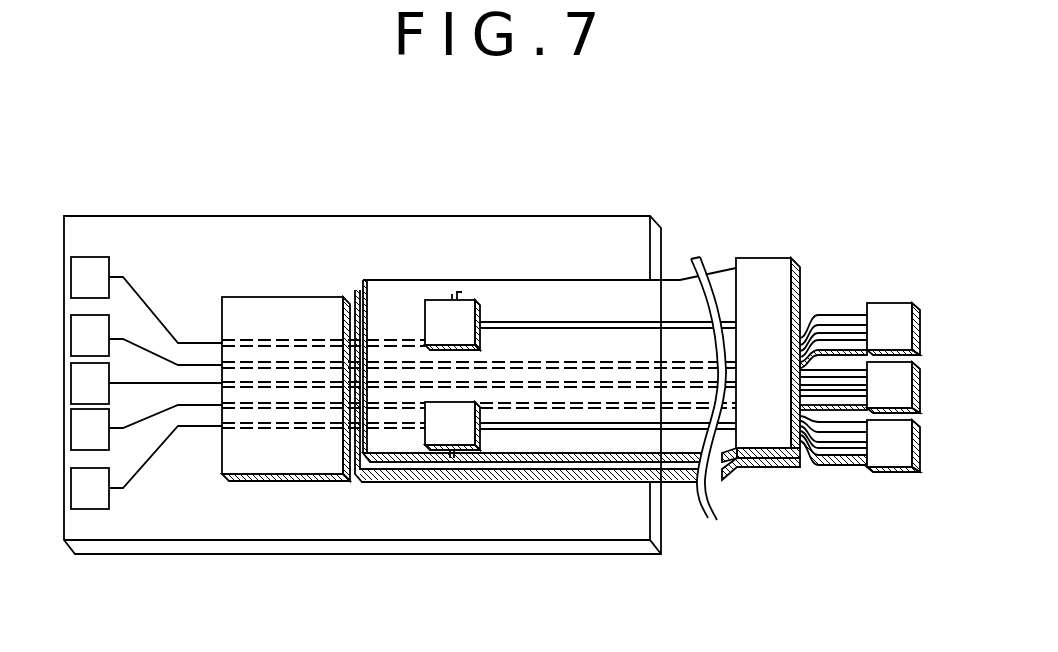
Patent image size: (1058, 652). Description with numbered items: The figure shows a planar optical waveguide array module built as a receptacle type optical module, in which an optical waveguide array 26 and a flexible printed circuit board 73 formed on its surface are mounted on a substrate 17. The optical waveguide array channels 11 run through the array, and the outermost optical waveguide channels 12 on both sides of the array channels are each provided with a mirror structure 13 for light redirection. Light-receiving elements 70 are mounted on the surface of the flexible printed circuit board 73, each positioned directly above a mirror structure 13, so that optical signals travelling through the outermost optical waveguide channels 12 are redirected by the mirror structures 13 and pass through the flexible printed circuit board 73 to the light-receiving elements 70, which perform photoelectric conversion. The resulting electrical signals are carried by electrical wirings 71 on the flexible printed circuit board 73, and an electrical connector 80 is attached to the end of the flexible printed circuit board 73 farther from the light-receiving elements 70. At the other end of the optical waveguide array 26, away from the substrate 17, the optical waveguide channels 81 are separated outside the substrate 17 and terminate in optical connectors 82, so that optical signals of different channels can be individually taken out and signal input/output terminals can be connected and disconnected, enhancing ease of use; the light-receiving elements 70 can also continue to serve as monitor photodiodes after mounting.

The optical waveguide array channels 11 is at (380, 457).
The outermost optical waveguide channels 12 is at (390, 337).
The mirror structure 13 is at (458, 298).
The substrate 17 is at (440, 250).
The optical waveguide array 26 is at (678, 483).
The light-receiving elements 70 is at (463, 318).
The electrical wirings 71 is at (610, 320).
The flexible printed circuit board 73 is at (672, 303).
The electrical connector 80 is at (765, 293).
The optical waveguide channels 81 is at (838, 323).
The optical connectors 82 is at (888, 327).